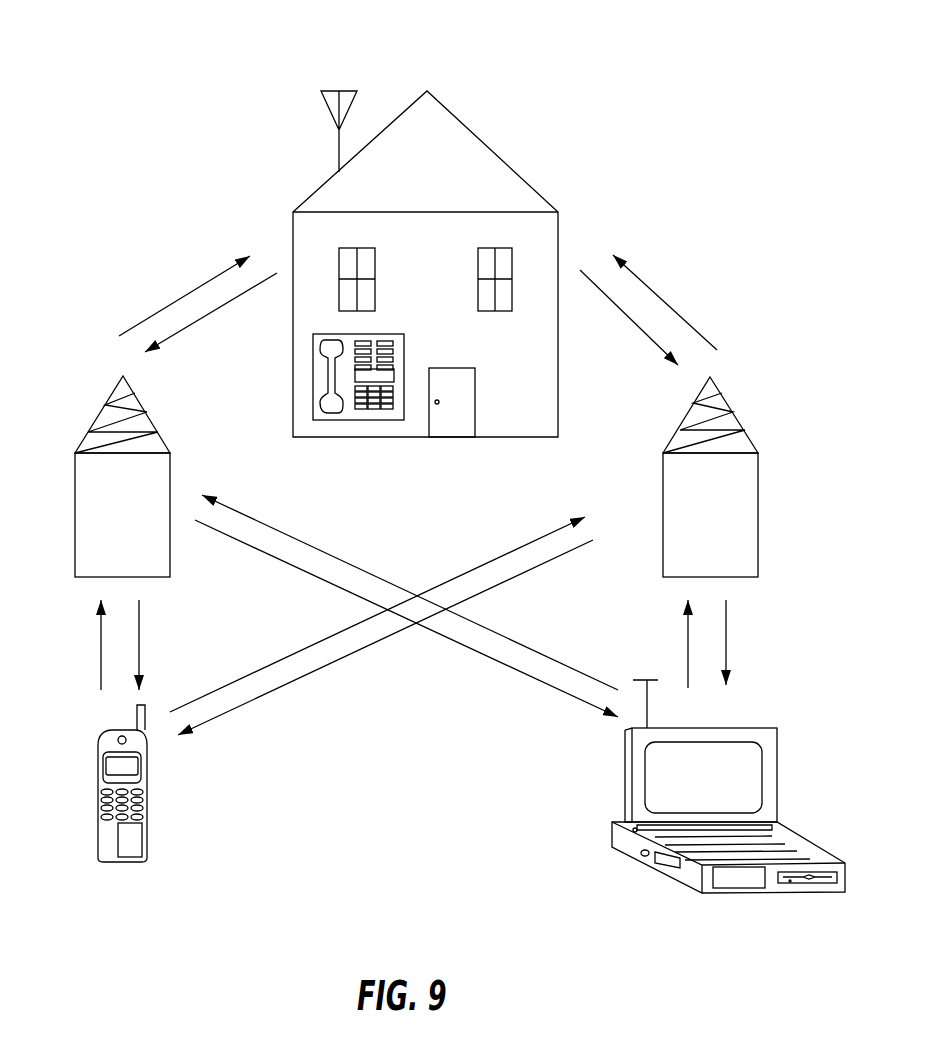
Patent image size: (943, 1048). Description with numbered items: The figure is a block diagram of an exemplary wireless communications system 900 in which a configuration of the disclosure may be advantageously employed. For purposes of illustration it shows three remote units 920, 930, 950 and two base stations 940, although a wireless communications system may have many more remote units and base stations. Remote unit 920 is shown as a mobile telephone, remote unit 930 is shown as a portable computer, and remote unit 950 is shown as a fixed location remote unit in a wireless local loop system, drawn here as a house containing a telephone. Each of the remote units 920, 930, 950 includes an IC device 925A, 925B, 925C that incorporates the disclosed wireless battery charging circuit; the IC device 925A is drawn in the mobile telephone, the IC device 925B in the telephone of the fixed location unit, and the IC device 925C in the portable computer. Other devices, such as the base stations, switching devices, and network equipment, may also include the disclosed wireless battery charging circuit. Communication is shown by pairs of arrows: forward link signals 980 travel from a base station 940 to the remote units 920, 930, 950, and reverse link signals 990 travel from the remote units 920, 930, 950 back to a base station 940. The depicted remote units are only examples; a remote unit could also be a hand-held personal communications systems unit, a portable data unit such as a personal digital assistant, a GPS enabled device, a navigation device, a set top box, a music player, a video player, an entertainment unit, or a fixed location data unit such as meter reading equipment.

The wireless communications system 900 is at (149, 74).
The remote unit 920 is at (98, 743).
The IC device 925A is at (130, 848).
The IC device 925B is at (390, 375).
The IC device 925C is at (742, 880).
The remote unit 930 is at (743, 727).
The base station 940 is at (100, 413).
The remote unit 950 is at (305, 375).
The forward link signals 980 is at (190, 292).
The reverse link signals 990 is at (215, 315).